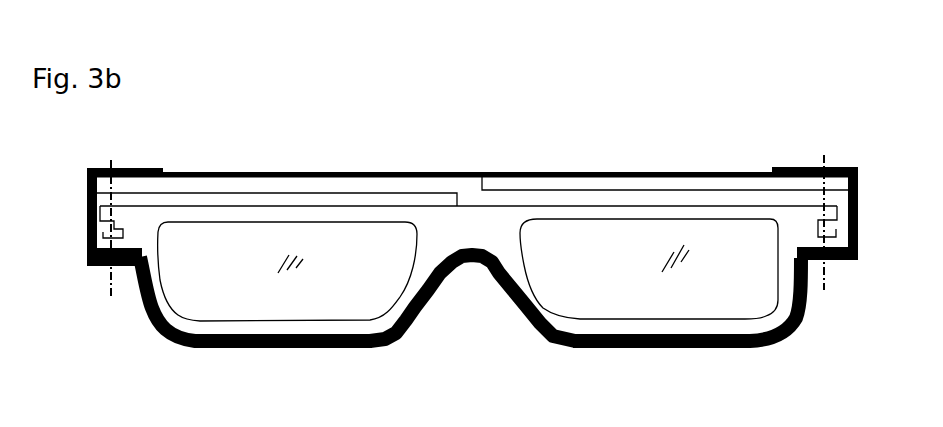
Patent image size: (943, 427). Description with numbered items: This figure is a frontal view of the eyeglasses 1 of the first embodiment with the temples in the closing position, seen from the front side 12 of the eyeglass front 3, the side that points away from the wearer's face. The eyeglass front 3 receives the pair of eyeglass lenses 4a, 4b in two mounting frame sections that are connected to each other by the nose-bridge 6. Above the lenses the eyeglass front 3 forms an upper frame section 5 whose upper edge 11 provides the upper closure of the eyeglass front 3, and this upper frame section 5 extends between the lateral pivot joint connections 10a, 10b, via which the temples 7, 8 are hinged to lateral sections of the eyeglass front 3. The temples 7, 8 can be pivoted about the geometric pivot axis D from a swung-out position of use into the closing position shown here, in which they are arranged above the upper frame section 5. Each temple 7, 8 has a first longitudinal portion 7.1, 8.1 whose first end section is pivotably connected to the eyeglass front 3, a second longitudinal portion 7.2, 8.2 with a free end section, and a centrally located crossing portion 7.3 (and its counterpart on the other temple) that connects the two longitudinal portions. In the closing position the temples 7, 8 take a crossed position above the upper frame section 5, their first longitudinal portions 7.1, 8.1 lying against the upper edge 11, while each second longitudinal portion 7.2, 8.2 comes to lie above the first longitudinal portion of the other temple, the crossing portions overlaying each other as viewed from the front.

The eyeglasses 1 is at (759, 352).
The eyeglass front 3 is at (140, 293).
The eyeglass lens 4a is at (600, 295).
The eyeglass lens 4b is at (222, 283).
The upper frame section 5 is at (218, 208).
The nose-bridge 6 is at (470, 230).
The temple 7 is at (745, 200).
The first longitudinal portion 7.1 is at (587, 200).
The second longitudinal portion 7.2 is at (315, 185).
The crossing portion 7.3 is at (468, 197).
The temple 8 is at (147, 201).
The first longitudinal portion 8.1 is at (397, 203).
The second longitudinal portion 8.2 is at (653, 183).
The pivot joint connection 10a is at (838, 229).
The pivot joint connection 10b is at (105, 230).
The upper edge 11 is at (525, 207).
The front side 12 is at (349, 298).
The pivot axis D is at (108, 283).